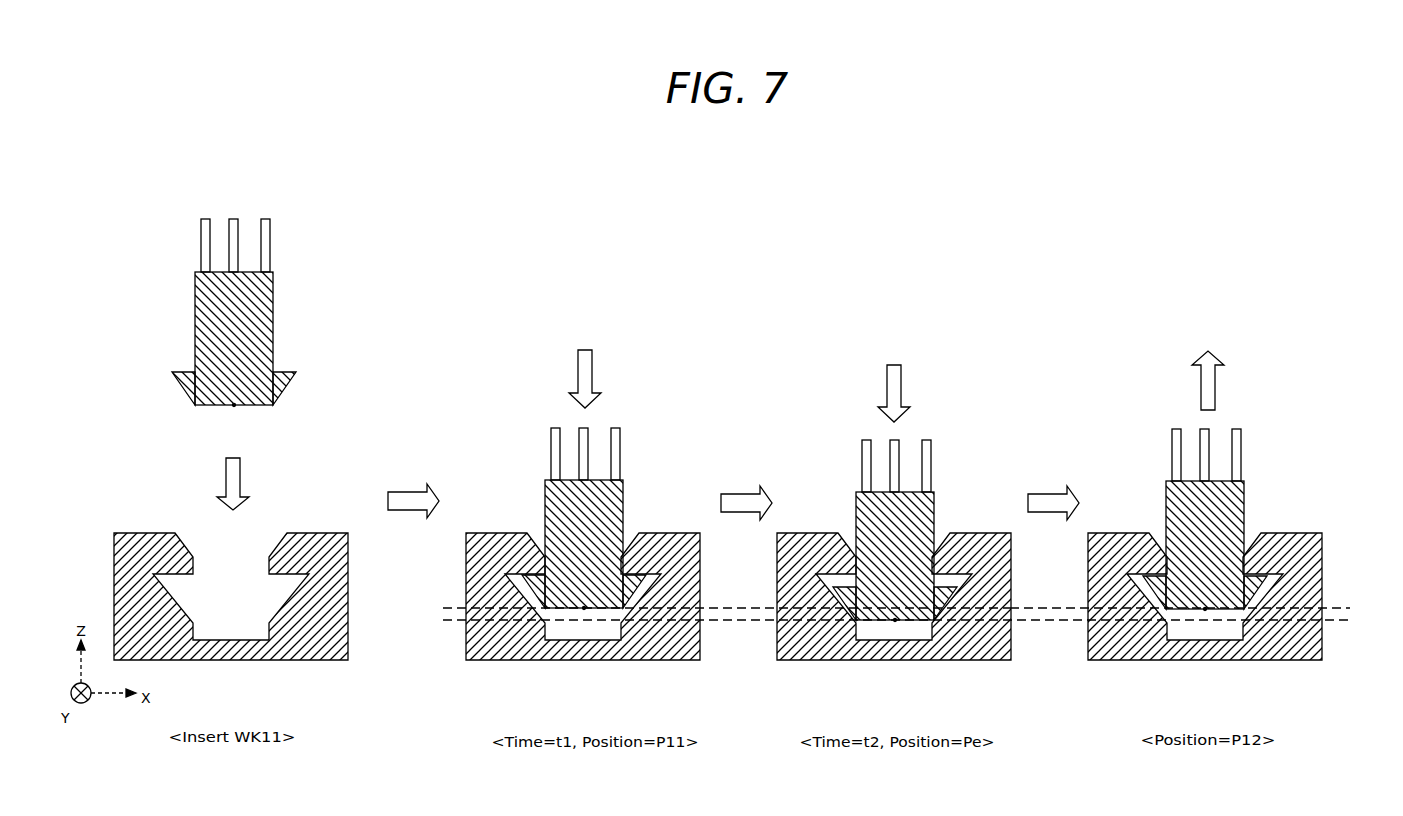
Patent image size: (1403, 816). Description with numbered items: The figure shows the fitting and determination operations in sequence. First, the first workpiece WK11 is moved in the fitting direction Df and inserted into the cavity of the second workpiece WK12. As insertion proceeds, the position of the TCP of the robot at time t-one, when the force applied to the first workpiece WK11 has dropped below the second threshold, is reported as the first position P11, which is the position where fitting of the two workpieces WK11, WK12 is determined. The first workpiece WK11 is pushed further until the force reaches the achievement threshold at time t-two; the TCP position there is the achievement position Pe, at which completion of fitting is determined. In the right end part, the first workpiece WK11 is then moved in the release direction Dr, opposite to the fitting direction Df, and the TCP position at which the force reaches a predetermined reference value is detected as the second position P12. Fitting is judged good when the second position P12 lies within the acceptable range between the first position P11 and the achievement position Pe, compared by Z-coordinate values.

The first workpiece WK11 is at (273, 288).
The second workpiece WK12 is at (268, 660).
The element TCP is at (234, 405).
The fitting direction Df is at (575, 430).
The release direction Dr is at (1220, 380).
The first position P11 is at (712, 607).
The achievement position Pe is at (883, 625).
The second position P12 is at (1198, 616).